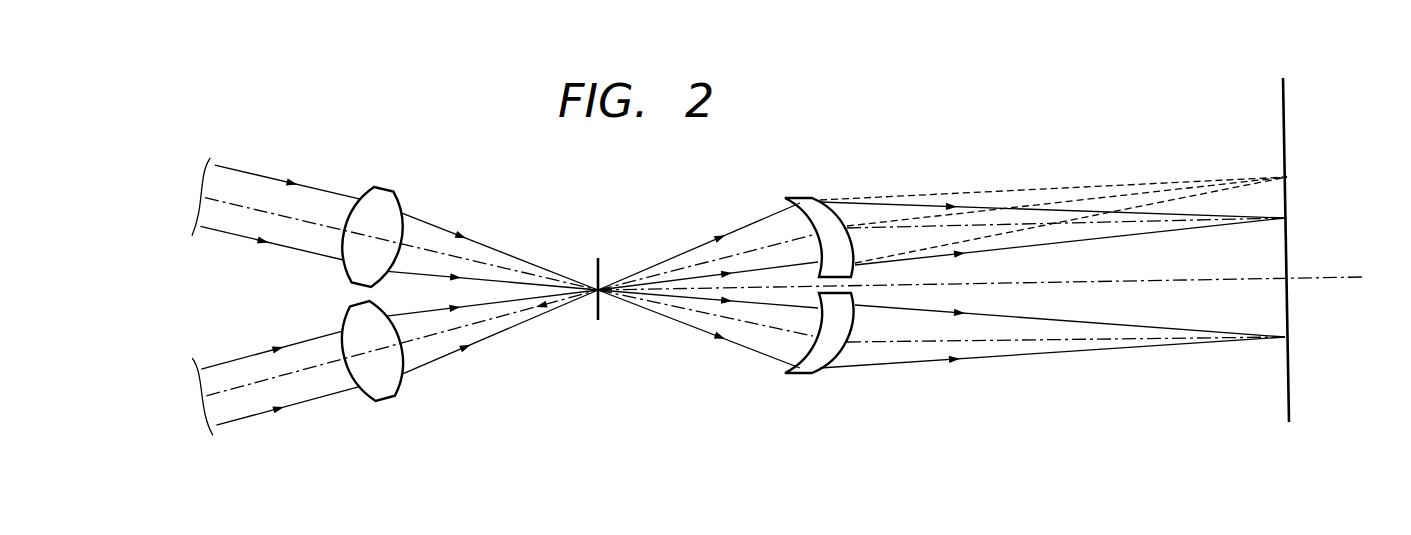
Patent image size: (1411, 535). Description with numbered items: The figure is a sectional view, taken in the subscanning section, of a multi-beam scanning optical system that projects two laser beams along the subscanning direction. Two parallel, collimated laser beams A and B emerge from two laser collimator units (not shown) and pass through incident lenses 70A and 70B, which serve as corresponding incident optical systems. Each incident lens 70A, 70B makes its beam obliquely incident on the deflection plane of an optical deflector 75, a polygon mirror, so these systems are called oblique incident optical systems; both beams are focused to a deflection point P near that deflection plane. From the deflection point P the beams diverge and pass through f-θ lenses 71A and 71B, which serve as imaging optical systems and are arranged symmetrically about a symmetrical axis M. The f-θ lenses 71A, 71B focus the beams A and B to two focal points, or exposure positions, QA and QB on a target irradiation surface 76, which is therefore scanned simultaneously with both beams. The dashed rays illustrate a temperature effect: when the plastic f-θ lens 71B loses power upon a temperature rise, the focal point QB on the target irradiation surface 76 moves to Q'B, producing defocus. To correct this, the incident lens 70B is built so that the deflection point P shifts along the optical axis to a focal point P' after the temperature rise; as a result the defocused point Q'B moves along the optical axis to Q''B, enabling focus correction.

The incident lens 70A is at (382, 203).
The incident lens 70B is at (385, 397).
The f-θ lens 71A is at (808, 378).
The f-θ lens 71B is at (805, 197).
The optical deflector 75 is at (603, 266).
The target irradiation surface 76 is at (1286, 96).
The laser beam A is at (262, 176).
The laser beam B is at (252, 412).
The deflection point P is at (492, 293).
The focal point P' is at (534, 352).
The focal point QA is at (1073, 336).
The focal point QB is at (1073, 233).
The focal point Q'B is at (1097, 211).
The focal point Q''B is at (1312, 143).
The symmetrical axis M is at (1337, 277).